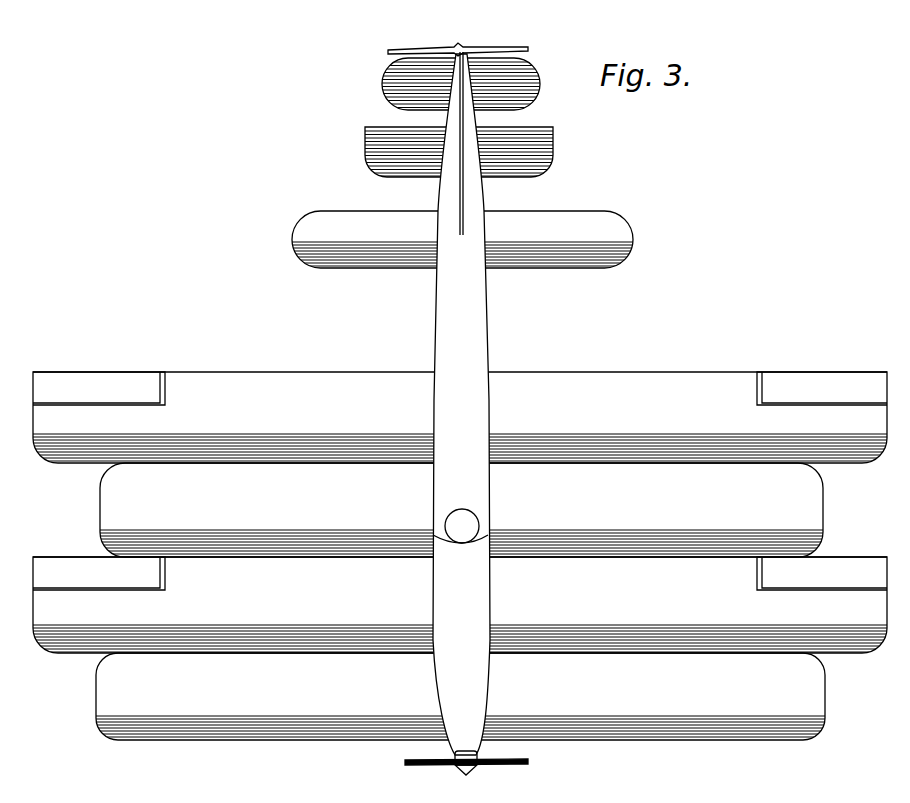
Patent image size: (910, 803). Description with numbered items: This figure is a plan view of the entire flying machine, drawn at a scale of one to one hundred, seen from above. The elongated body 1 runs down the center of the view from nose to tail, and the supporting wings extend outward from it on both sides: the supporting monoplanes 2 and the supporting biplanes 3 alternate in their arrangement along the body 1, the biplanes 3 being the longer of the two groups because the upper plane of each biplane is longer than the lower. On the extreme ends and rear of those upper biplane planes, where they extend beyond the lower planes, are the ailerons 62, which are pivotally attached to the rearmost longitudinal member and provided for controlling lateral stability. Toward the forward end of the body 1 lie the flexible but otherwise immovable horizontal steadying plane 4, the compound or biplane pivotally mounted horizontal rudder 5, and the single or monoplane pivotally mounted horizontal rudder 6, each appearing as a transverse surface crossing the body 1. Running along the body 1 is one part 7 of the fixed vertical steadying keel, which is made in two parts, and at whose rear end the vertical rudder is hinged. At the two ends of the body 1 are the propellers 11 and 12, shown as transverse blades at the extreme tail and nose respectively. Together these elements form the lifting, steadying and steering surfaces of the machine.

The body 1 is at (461, 404).
The supporting monoplanes 2 is at (460, 601).
The supporting biplanes 3 is at (460, 512).
The horizontal steadying plane 4 is at (628, 274).
The biplane horizontal rudder 5 is at (566, 146).
The monoplane horizontal rudder 6 is at (549, 79).
The vertical steadying keel 7 is at (463, 192).
The propeller 11 is at (422, 770).
The propeller 12 is at (398, 50).
The ailerons 62 is at (99, 378).